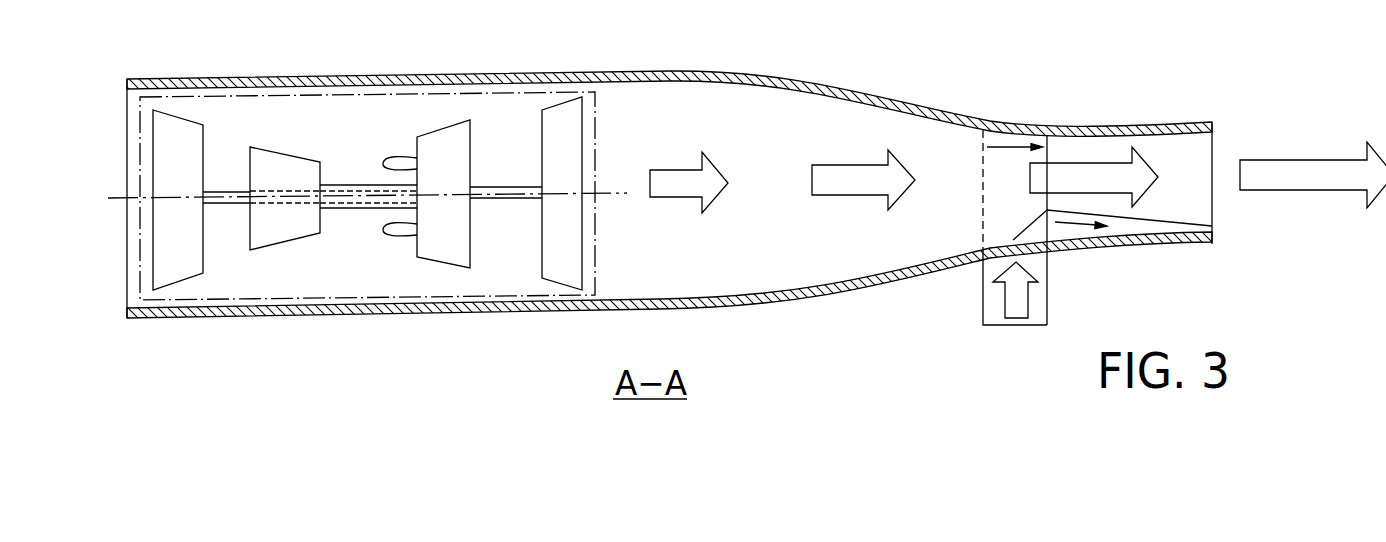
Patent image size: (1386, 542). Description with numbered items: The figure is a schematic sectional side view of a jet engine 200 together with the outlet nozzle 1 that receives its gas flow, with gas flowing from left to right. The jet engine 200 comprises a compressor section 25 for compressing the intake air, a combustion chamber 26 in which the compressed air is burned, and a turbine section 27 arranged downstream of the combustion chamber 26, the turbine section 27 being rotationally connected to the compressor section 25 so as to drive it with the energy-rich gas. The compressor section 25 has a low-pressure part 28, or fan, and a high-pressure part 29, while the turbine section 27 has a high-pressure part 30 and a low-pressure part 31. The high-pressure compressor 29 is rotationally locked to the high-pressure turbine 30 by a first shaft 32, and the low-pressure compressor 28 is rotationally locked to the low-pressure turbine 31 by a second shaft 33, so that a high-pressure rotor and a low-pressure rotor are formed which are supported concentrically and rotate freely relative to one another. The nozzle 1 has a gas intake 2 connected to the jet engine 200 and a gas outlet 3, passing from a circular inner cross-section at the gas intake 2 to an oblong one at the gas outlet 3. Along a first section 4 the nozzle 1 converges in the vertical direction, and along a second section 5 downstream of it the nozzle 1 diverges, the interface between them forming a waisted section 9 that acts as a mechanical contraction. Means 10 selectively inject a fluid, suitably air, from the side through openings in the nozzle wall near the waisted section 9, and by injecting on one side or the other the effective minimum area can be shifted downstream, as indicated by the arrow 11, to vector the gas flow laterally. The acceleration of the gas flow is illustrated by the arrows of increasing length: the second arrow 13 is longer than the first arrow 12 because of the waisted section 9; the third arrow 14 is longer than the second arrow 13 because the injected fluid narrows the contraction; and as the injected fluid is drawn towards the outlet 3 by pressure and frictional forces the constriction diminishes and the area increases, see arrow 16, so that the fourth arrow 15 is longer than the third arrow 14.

The outlet nozzle 1 is at (887, 71).
The gas intake 2 is at (669, 215).
The gas outlet 3 is at (1205, 207).
The first section 4 is at (842, 288).
The second section 5 is at (1168, 125).
The waisted section 9 is at (974, 314).
The means for selective injection of the fluid 10 is at (960, 292).
The arrow indicating shift of effective minimum area 11 is at (995, 140).
The first arrow 12 is at (680, 173).
The second arrow 13 is at (848, 178).
The third arrow 14 is at (1113, 170).
The fourth arrow 15 is at (1310, 167).
The arrow indicating area increase 16 is at (1070, 223).
The compressor section 25 is at (215, 195).
The combustion chamber 26 is at (392, 160).
The turbine section 27 is at (499, 194).
The low-pressure part 28 is at (172, 125).
The high-pressure part 29 is at (283, 167).
The high-pressure part 30 is at (445, 138).
The low-pressure part 31 is at (560, 110).
The first shaft 32 is at (357, 188).
The second shaft 33 is at (223, 193).
The jet engine 200 is at (352, 210).